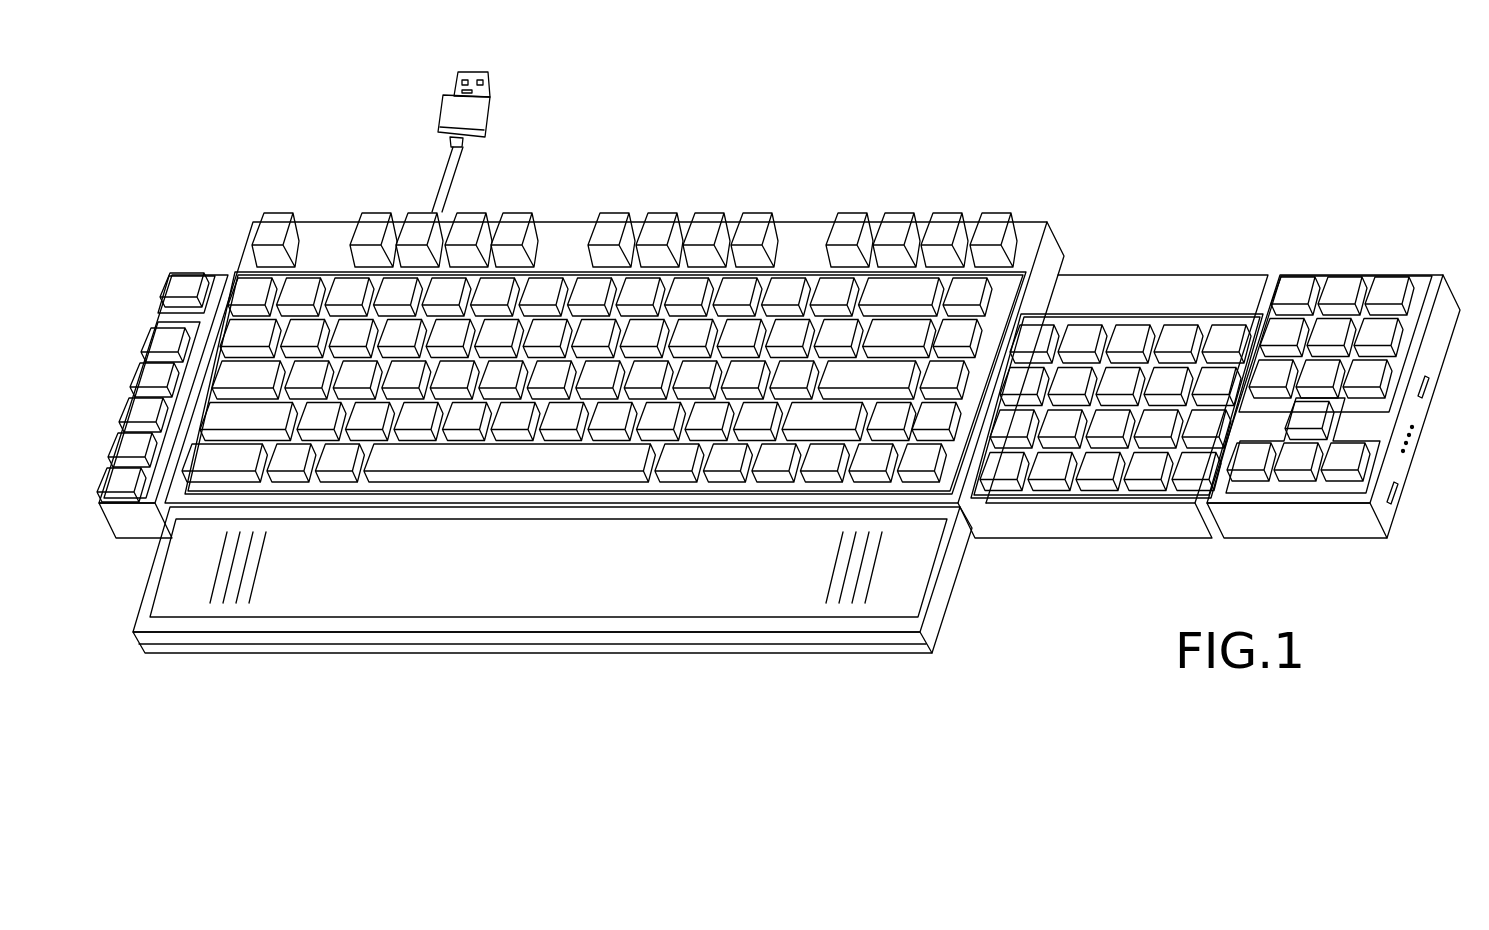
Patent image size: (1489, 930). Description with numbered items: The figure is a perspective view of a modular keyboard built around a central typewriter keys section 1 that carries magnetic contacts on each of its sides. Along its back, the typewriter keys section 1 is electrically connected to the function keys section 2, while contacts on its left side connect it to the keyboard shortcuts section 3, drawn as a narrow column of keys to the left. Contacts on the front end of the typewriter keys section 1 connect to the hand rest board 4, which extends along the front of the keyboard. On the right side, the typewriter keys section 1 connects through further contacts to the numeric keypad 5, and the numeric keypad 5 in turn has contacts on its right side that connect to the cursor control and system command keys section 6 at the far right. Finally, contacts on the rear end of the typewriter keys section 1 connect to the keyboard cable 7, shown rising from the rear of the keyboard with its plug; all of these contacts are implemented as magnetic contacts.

The typewriter keys section 1 is at (957, 277).
The function keys section 2 is at (800, 243).
The keyboard shortcuts section 3 is at (200, 289).
The hand rest board 4 is at (745, 590).
The numeric keypad 5 is at (1105, 303).
The cursor control and system command keys section 6 is at (1378, 300).
The keyboard cable 7 is at (470, 118).